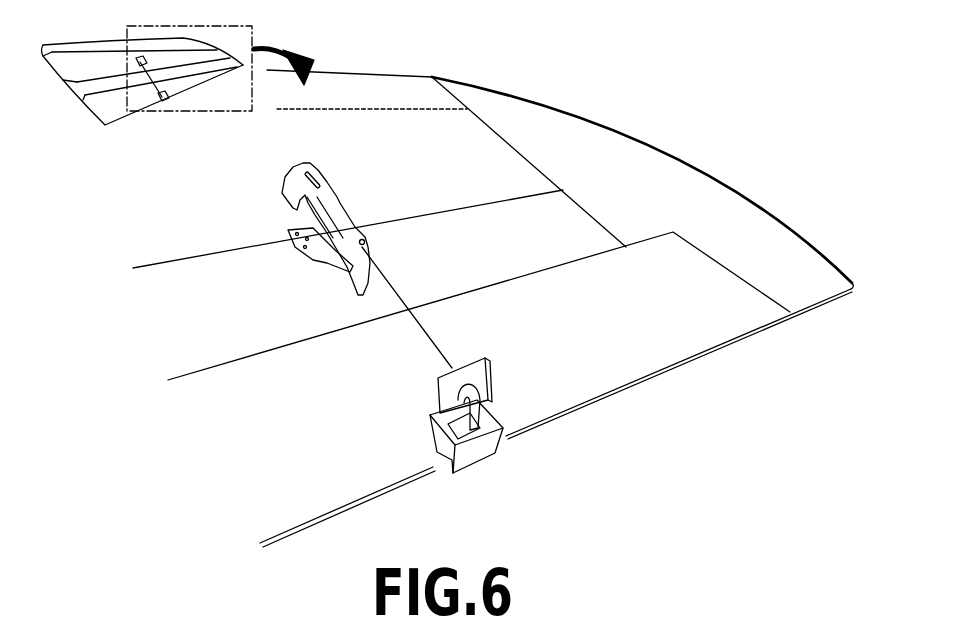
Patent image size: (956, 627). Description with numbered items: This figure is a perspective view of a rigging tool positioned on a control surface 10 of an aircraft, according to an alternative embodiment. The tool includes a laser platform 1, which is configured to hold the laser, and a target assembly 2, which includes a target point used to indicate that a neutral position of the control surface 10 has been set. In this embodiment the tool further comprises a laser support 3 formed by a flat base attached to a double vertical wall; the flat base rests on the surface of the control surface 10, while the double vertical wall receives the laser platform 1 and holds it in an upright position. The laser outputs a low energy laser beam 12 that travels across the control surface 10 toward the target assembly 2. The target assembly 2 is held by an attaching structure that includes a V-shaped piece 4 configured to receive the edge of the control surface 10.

The laser platform 1 is at (278, 182).
The target assembly 2 is at (434, 389).
The laser support 3 is at (284, 237).
The V-shaped piece 4 is at (437, 443).
The control surface 10 is at (608, 362).
The low energy laser beam 12 is at (402, 297).